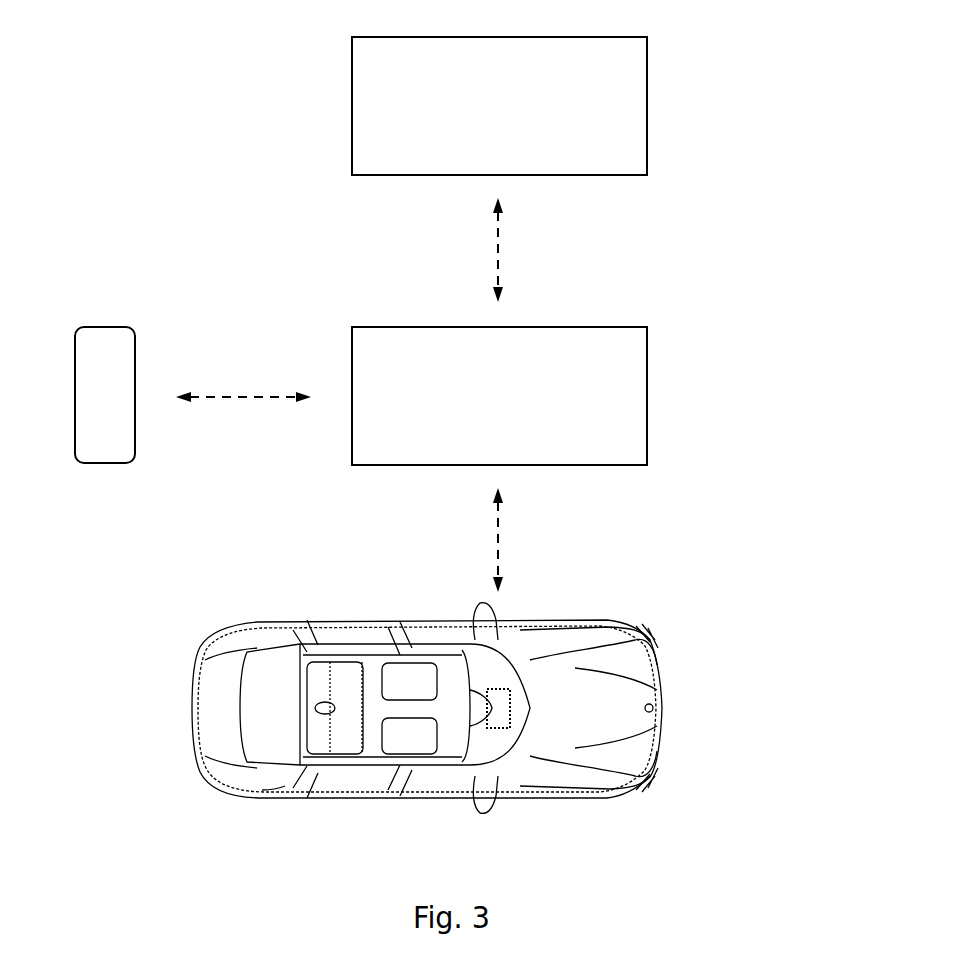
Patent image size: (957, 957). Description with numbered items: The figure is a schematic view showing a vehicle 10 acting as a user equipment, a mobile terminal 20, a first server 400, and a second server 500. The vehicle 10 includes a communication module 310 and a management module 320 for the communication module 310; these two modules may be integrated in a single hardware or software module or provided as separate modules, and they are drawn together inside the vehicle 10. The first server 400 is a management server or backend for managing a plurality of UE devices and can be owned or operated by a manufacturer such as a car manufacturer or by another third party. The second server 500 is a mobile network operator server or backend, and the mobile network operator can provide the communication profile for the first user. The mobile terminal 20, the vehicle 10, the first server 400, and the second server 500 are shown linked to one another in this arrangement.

The second server 500 is at (474, 125).
The first server 400 is at (474, 415).
The mobile terminal 20 is at (150, 312).
The vehicle 10 is at (168, 627).
The communication module 310 is at (494, 689).
The management module 320 is at (498, 708).